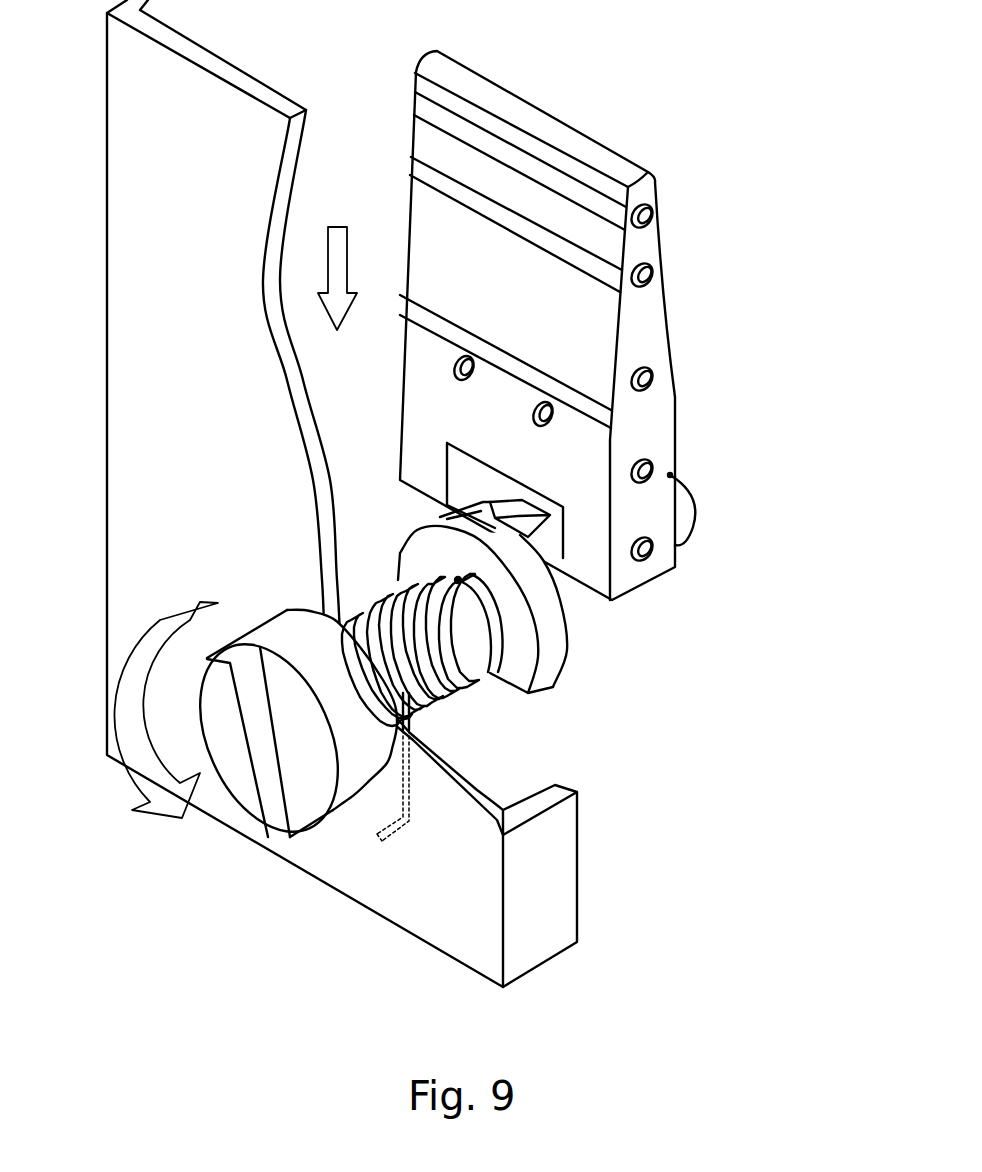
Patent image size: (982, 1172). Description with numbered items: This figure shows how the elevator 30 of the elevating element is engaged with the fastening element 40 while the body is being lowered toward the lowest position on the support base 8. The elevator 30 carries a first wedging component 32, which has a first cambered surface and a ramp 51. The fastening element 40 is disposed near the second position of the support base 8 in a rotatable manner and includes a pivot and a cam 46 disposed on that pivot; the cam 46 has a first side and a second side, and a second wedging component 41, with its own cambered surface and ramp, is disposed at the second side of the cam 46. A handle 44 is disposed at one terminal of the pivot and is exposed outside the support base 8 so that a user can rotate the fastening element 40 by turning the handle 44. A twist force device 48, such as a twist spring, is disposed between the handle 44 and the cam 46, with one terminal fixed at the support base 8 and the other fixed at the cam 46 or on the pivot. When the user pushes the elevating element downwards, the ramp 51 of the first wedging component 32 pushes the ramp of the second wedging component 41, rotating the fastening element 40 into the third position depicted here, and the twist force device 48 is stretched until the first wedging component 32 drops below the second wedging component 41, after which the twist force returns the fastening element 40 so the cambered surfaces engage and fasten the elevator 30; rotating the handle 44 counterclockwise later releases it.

The support base 8 is at (353, 888).
The elevator 30 is at (647, 333).
The first wedging component 32 is at (527, 520).
The fastening element 40 is at (333, 540).
The second wedging component 41 is at (485, 512).
The handle 44 is at (270, 628).
The cam 46 is at (540, 653).
The twist force device 48 is at (453, 690).
The ramp 51 is at (517, 508).